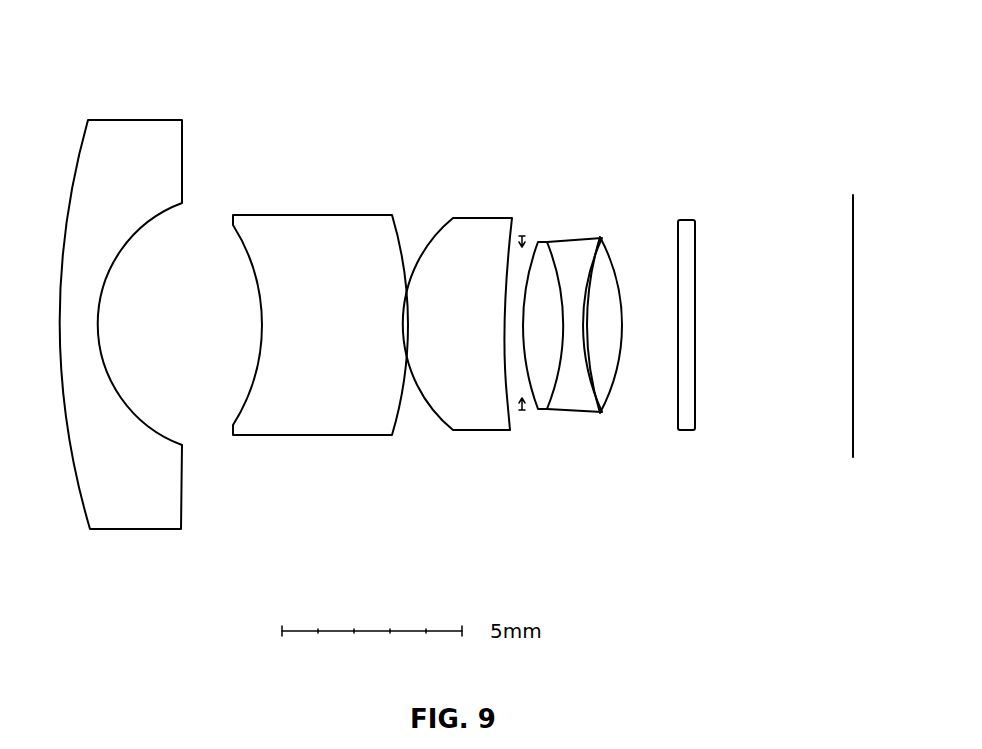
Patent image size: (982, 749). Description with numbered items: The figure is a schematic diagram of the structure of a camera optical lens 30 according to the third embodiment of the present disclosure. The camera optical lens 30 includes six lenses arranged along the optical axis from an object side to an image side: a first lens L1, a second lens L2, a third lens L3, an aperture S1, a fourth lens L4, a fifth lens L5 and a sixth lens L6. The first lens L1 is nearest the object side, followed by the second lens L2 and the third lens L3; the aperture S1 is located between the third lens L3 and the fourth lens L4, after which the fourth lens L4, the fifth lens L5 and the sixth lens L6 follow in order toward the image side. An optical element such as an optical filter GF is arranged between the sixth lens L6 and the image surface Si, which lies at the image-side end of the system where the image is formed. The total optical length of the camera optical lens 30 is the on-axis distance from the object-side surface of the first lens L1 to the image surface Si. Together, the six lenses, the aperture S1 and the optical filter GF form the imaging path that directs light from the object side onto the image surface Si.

The camera optical lens 30 is at (476, 28).
The first lens L1 is at (121, 304).
The second lens L2 is at (320, 308).
The third lens L3 is at (457, 308).
The aperture S1 is at (529, 307).
The fourth lens L4 is at (543, 325).
The fifth lens L5 is at (574, 314).
The sixth lens L6 is at (604, 310).
The optical filter GF is at (687, 311).
The image surface Si is at (852, 310).